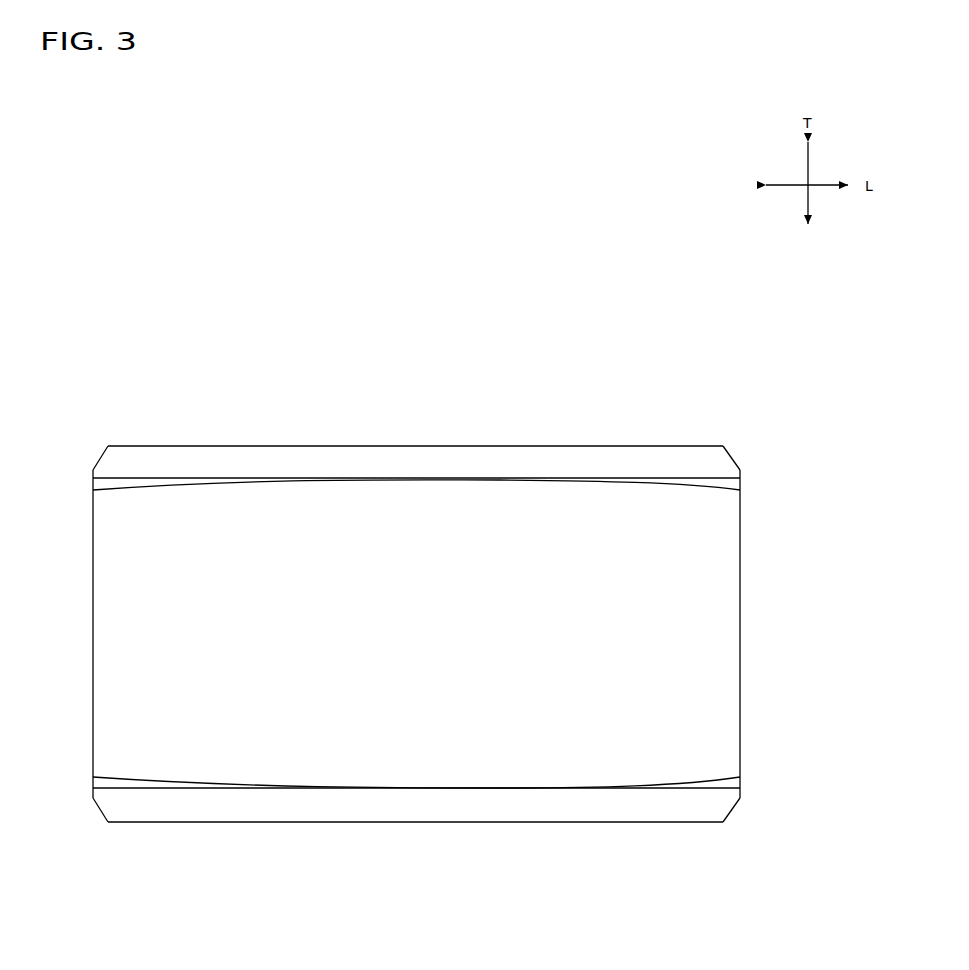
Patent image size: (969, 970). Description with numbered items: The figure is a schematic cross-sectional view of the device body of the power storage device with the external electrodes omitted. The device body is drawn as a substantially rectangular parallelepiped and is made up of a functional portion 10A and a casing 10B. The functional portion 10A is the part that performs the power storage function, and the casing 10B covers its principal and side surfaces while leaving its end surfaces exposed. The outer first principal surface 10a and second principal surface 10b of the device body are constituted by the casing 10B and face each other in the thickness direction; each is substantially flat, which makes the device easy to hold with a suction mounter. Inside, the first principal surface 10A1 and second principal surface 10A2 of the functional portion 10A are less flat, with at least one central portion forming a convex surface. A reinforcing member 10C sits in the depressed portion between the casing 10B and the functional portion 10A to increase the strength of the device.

The first principal surface 10a is at (322, 446).
The first principal surface of the functional portion 10A1 is at (676, 484).
The functional portion 10A is at (168, 786).
The second principal surface of the functional portion 10A2 is at (705, 783).
The reinforcing member 10C is at (97, 790).
The casing 10B is at (260, 825).
The second principal surface 10b is at (415, 822).